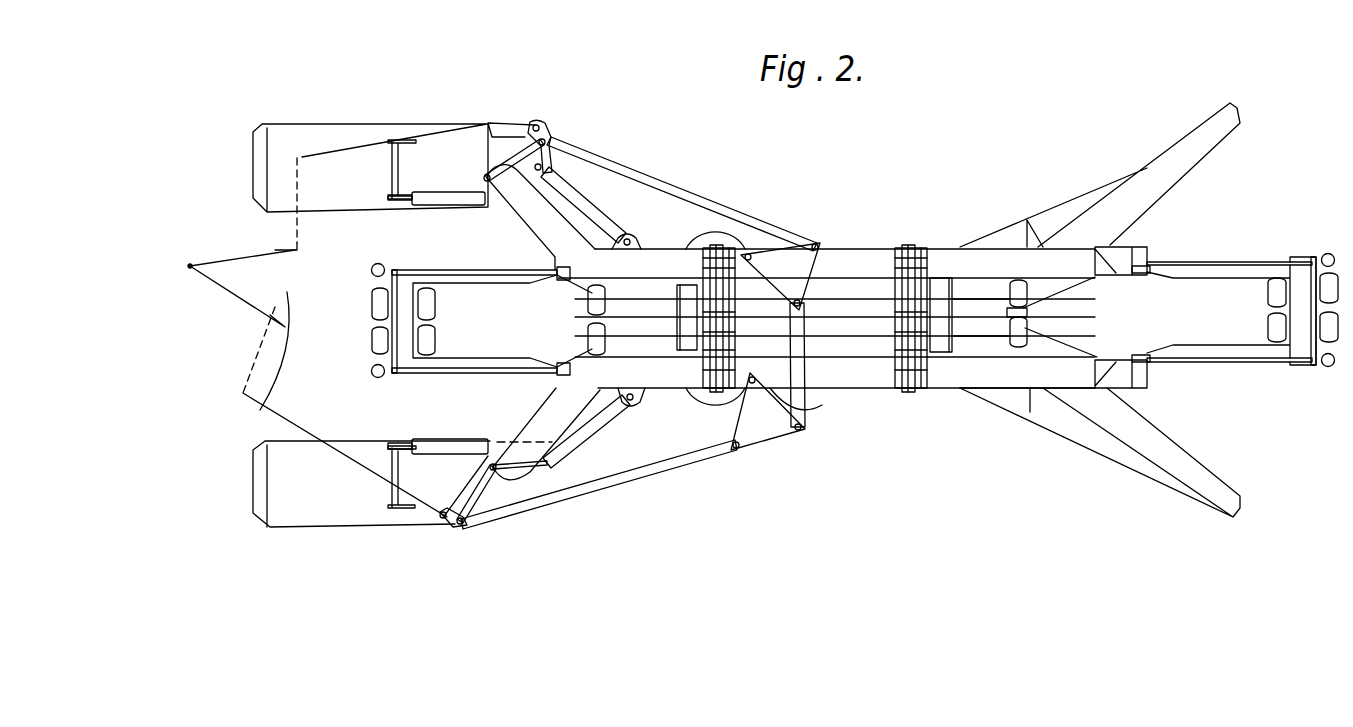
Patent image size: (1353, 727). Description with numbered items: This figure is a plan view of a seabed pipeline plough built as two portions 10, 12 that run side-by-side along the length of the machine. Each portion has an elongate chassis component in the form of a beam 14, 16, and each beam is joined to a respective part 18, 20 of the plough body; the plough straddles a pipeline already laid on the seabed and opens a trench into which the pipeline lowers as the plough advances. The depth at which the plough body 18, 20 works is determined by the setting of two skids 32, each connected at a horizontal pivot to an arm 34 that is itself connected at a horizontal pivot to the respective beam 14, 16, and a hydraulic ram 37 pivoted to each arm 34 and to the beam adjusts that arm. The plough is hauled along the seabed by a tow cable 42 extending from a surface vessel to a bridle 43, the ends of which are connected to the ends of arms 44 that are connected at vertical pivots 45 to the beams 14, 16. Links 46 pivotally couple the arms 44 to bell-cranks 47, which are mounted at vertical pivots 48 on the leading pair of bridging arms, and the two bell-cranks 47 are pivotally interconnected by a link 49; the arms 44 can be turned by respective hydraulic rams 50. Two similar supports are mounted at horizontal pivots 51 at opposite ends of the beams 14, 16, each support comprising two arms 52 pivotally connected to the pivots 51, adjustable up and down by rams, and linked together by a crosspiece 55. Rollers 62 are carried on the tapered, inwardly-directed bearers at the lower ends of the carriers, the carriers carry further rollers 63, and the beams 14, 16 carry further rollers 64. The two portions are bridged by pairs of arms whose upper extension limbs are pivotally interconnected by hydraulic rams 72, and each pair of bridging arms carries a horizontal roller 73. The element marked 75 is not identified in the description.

The plough portion 10 is at (845, 247).
The plough portion 12 is at (886, 390).
The chassis beam 14 is at (650, 253).
The chassis beam 16 is at (649, 378).
The plough body part 18 is at (1097, 183).
The plough body part 20 is at (1051, 422).
The skid 32 is at (355, 165).
The arm 34 is at (418, 162).
The hydraulic ram 37 is at (455, 185).
The tow cable 42 is at (190, 263).
The bridle 43 is at (305, 158).
The arm 44 is at (548, 128).
The vertical pivot 45 is at (497, 165).
The link 46 is at (622, 165).
The bell-crank 47 is at (795, 243).
The vertical pivot 48 is at (749, 254).
The link 49 is at (800, 365).
The hydraulic ram 50 is at (567, 195).
The horizontal pivot 51 is at (1144, 274).
The support arm 52 is at (450, 268).
The crosspiece 55 is at (1305, 300).
The roller 62 is at (373, 332).
The roller 63 is at (380, 264).
The roller 64 is at (590, 330).
The hydraulic ram 72 is at (716, 248).
The horizontal roller 73 is at (688, 352).
The frame member 75 is at (973, 302).